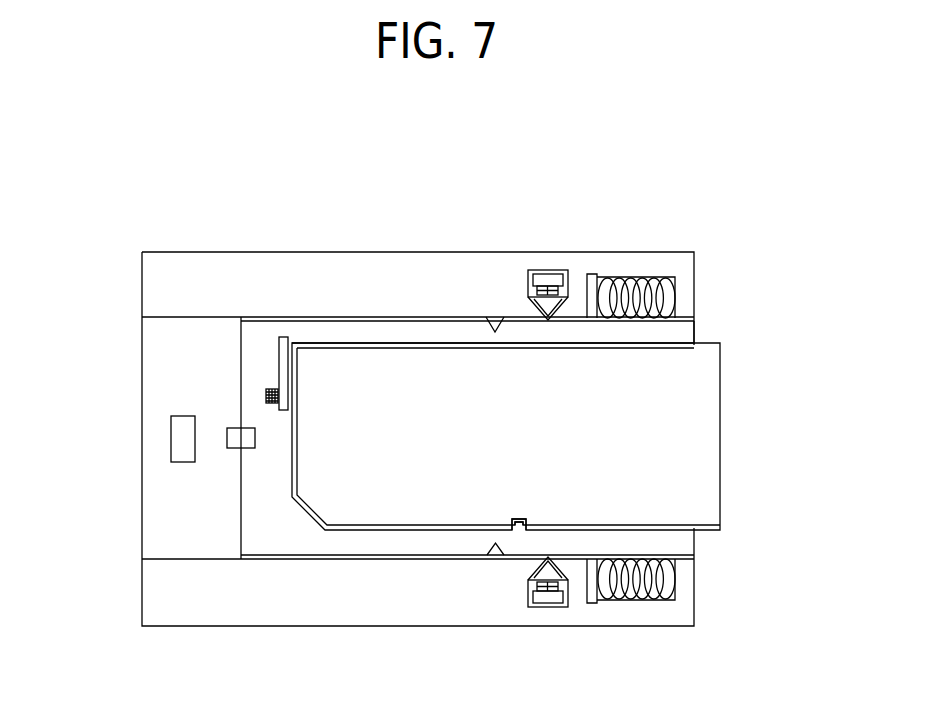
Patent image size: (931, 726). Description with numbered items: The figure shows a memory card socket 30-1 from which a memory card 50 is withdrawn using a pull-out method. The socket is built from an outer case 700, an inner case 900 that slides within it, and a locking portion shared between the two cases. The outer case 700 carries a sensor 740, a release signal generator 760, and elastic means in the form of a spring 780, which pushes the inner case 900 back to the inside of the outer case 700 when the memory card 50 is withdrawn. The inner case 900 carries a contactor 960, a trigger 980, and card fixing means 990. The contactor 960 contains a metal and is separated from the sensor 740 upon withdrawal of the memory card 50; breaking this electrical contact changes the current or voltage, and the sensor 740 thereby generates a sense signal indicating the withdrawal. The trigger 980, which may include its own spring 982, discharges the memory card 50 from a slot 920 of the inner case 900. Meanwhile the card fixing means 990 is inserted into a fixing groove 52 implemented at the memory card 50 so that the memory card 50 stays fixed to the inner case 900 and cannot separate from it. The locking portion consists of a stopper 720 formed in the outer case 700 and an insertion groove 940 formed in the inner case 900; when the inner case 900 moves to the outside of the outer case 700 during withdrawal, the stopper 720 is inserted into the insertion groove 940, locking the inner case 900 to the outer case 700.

The memory card socket 30-1 is at (753, 150).
The outer case 700 is at (332, 282).
The stopper 720 is at (546, 305).
The spring 780 is at (630, 282).
The inner case 900 is at (690, 333).
The slot 920 is at (694, 347).
The memory card 50 is at (700, 403).
The fixing groove 52 is at (520, 522).
The card fixing means 990 is at (543, 554).
The insertion groove 940 is at (487, 556).
The contactor 960 is at (250, 448).
The sensor 740 is at (229, 449).
The release signal generator 760 is at (182, 445).
The trigger 980 is at (285, 337).
The spring 982 is at (265, 395).